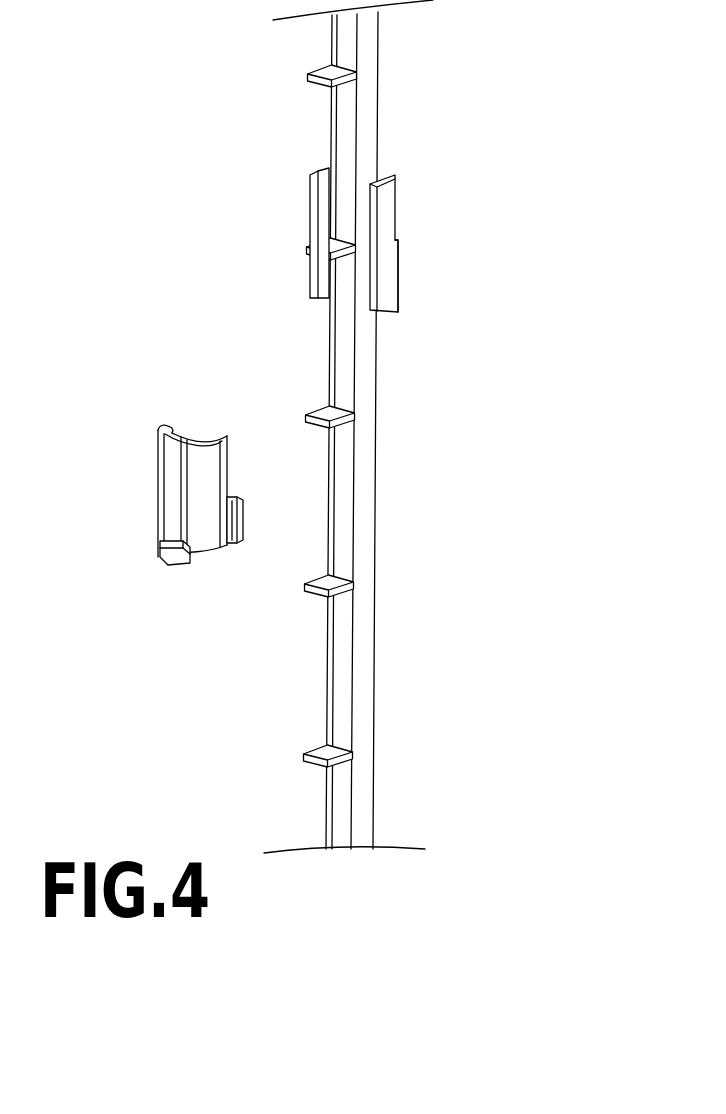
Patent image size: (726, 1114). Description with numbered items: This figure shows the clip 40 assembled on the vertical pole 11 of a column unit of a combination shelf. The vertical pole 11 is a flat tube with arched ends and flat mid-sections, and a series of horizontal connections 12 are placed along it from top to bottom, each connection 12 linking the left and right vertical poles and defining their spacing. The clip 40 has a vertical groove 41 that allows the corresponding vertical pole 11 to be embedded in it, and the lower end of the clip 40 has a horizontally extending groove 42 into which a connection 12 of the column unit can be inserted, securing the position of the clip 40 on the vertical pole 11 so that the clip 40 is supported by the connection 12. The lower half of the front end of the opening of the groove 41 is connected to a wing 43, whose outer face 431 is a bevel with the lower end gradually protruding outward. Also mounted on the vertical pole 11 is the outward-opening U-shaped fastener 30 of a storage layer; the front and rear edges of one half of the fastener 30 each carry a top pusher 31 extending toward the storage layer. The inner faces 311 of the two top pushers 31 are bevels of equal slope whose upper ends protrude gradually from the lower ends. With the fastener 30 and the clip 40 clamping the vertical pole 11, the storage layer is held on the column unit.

The vertical pole 11 is at (360, 678).
The connection 12 is at (330, 580).
The fastener 30 is at (376, 236).
The top pusher 31 is at (322, 270).
The inner face 311 is at (397, 272).
The clip 40 is at (189, 483).
The vertical groove 41 is at (190, 433).
The groove 42 is at (165, 562).
The wing 43 is at (232, 556).
The outer face 431 is at (229, 528).